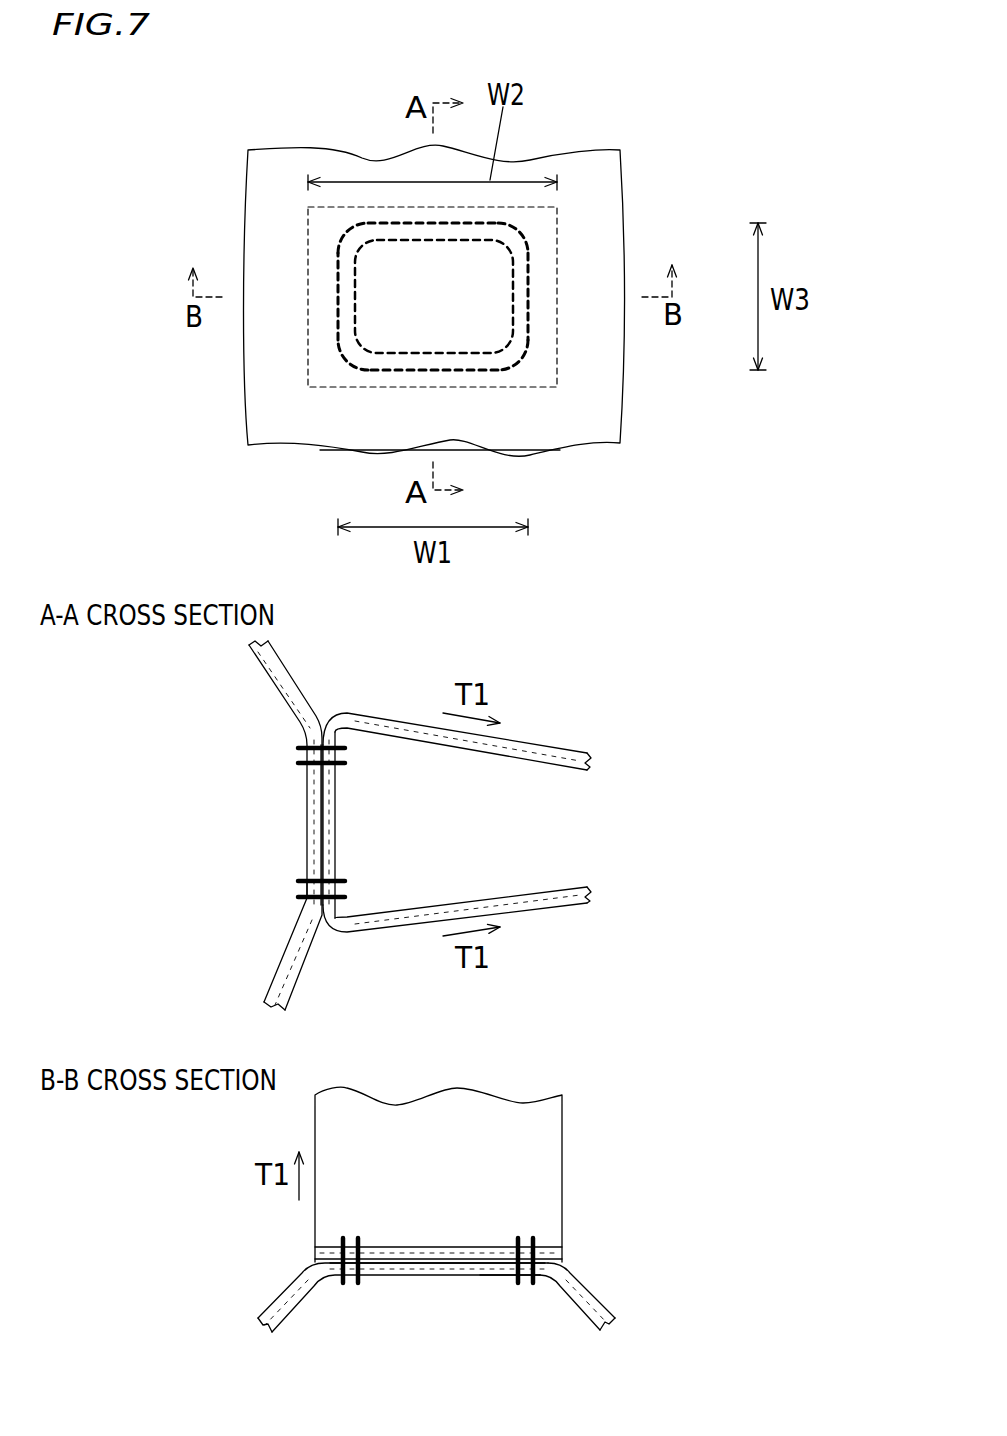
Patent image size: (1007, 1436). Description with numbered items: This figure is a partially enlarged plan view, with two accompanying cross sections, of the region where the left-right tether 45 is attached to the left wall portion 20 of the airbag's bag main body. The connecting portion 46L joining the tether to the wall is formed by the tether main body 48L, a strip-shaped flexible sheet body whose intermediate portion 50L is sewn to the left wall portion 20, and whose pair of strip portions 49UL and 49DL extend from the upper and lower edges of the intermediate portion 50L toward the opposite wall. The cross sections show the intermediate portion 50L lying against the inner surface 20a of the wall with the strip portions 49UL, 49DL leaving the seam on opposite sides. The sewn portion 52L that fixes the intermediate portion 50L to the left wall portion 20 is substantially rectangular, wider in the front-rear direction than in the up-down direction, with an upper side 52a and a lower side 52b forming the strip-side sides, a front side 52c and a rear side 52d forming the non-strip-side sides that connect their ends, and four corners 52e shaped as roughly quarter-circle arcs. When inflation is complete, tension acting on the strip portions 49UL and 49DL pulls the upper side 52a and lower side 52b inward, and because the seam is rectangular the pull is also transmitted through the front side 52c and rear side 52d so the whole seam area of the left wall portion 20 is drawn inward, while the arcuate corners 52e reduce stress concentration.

The left wall portion 20 is at (605, 213).
The panel surface 20a is at (293, 833).
The left-right tether 45 is at (554, 669).
The connecting portion 46L is at (533, 413).
The tether main body 48L is at (520, 198).
The strip portion 49UL is at (487, 753).
The strip portion 49DL is at (490, 895).
The intermediate portion 50L is at (320, 353).
The sewn portion 52L is at (533, 277).
The upper side 52a is at (382, 223).
The lower side 52b is at (382, 372).
The front side 52c is at (337, 328).
The rear side 52d is at (528, 328).
The corner 52e is at (343, 242).